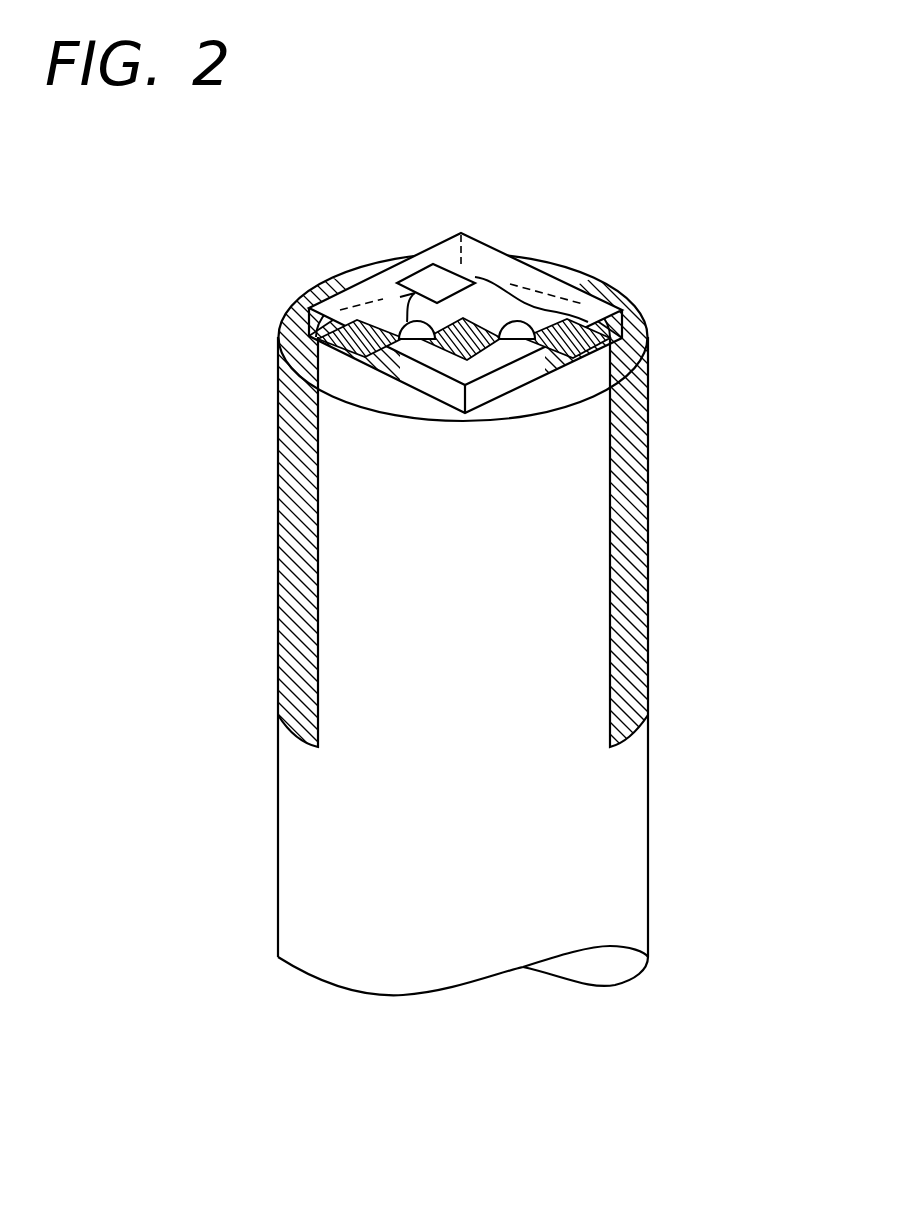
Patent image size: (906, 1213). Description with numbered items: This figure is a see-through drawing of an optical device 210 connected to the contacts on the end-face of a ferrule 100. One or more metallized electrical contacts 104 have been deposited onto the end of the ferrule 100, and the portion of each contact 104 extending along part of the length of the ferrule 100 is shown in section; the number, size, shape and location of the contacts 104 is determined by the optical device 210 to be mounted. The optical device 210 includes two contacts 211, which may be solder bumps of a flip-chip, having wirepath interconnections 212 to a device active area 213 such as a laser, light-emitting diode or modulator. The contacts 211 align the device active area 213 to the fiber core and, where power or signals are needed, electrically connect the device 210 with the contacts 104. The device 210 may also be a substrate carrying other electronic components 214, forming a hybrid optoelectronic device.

The ferrule 100 is at (630, 855).
The metallized electrical contacts 104 is at (287, 617).
The optical device 210 is at (483, 243).
The contacts 211 is at (337, 327).
The wirepath interconnections 212 is at (397, 326).
The device active area 213 is at (457, 350).
The electronic components 214 is at (430, 273).